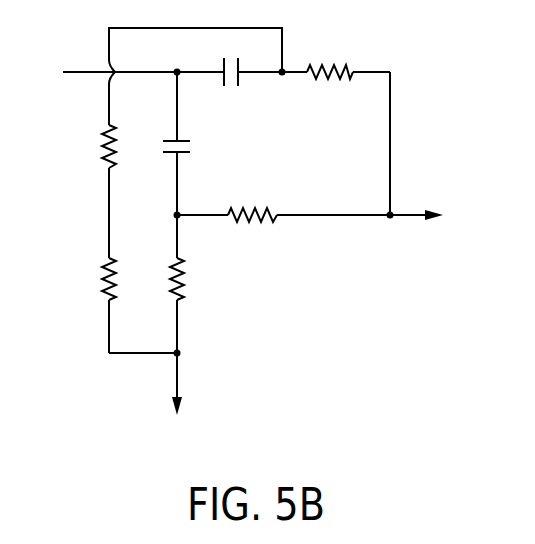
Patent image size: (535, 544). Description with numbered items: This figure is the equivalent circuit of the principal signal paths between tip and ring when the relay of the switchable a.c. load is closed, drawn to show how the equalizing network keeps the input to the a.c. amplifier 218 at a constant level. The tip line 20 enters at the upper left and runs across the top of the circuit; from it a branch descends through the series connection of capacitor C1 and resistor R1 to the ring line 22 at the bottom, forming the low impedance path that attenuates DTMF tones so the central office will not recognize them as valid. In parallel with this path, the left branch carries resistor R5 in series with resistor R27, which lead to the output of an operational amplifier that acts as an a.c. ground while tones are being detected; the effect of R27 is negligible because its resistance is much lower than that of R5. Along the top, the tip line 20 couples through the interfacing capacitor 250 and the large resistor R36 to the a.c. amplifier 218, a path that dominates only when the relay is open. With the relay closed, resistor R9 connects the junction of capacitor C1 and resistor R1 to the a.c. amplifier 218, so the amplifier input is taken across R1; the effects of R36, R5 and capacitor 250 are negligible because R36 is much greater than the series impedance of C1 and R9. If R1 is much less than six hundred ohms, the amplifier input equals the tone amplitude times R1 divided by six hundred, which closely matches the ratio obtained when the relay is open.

The tip line 20 is at (82, 70).
The interfacing capacitor 250 is at (229, 95).
The a.c. amplifier 218 is at (437, 218).
The ring line 22 is at (176, 402).
The resistor R36 is at (329, 58).
The resistor R5 is at (89, 146).
The capacitor C1 is at (160, 150).
The resistor R9 is at (252, 201).
The resistor R1 is at (195, 279).
The resistor R27 is at (80, 279).